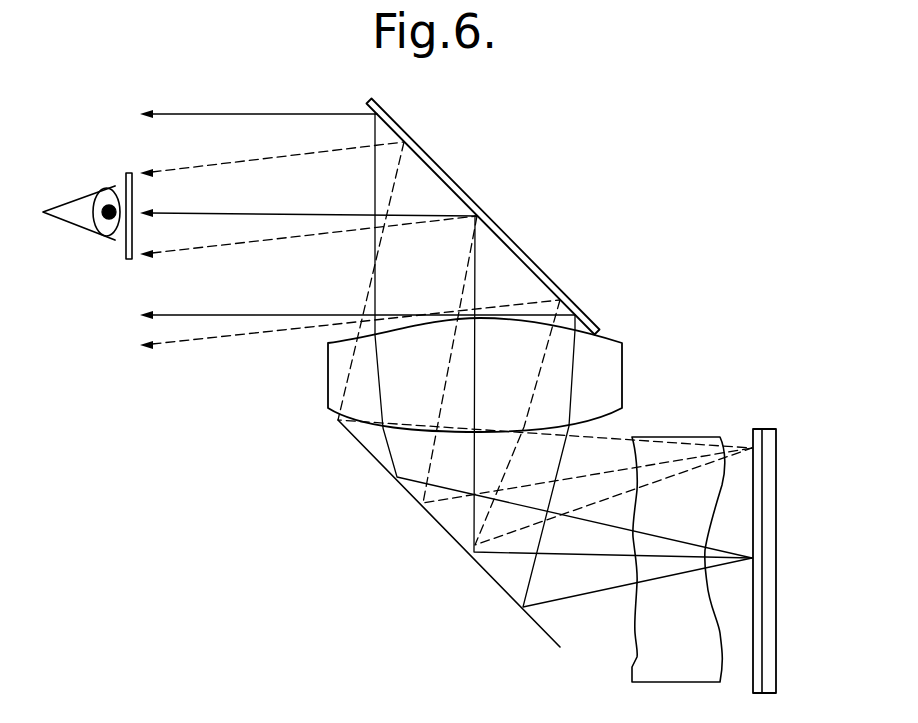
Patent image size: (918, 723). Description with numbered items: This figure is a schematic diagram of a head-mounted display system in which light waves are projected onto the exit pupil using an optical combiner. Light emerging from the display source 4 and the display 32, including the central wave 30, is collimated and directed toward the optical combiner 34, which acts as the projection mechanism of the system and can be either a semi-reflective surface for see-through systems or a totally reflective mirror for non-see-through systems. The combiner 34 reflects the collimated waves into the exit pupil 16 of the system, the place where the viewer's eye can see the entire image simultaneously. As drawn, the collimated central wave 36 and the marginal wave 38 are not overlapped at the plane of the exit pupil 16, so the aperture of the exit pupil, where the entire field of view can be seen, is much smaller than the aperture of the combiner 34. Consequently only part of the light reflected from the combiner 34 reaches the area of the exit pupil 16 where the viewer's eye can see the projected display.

The display source 4 is at (767, 677).
The exit pupil 16 is at (125, 252).
The central wave 30 is at (722, 551).
The display 32 is at (738, 440).
The optical combiner 34 is at (505, 237).
The collimated central wave 36 is at (169, 112).
The marginal wave 38 is at (297, 152).